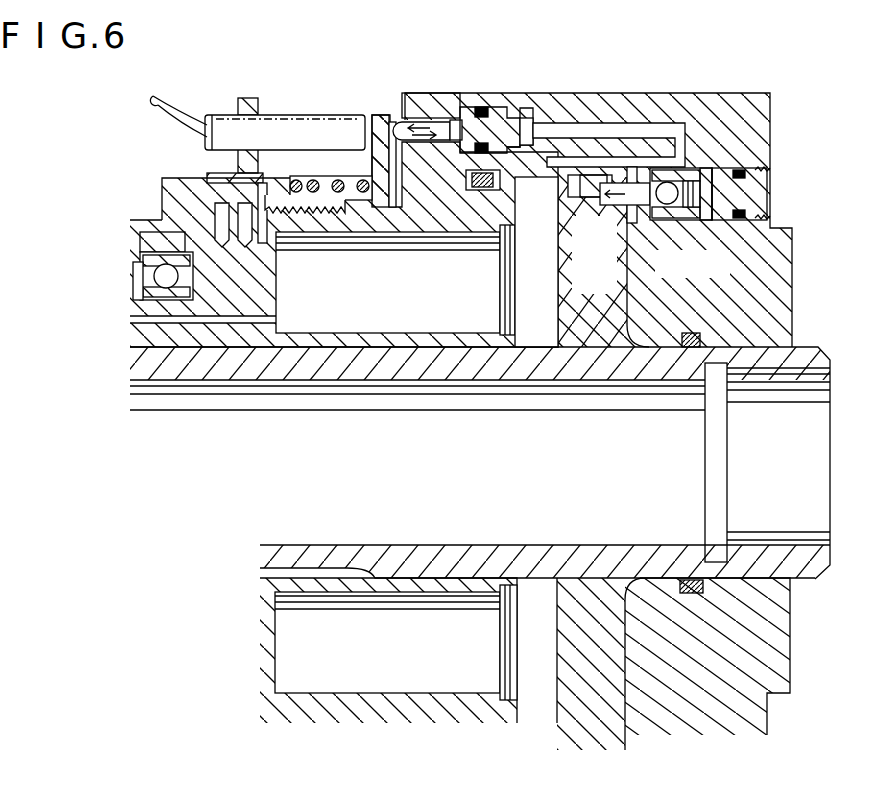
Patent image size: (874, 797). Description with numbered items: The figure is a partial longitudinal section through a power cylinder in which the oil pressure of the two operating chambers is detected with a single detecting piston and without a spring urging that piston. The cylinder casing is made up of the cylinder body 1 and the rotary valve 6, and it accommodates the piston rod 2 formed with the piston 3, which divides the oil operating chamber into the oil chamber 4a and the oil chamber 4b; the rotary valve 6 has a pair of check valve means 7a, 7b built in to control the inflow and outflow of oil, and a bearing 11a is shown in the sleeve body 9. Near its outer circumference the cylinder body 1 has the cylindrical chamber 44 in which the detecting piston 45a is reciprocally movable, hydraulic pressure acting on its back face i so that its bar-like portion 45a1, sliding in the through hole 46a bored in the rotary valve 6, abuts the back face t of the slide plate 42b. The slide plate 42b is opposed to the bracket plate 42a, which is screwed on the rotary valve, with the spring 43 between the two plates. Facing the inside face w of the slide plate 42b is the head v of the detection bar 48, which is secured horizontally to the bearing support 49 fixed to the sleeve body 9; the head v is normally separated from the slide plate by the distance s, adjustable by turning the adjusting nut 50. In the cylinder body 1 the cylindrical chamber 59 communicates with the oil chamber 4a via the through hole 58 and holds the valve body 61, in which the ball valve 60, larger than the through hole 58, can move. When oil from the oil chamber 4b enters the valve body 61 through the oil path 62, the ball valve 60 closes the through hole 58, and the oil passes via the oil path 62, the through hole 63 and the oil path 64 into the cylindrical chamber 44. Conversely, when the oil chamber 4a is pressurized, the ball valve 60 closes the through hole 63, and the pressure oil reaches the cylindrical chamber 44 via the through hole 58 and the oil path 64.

The cylinder body 1 is at (770, 93).
The piston rod 2 is at (210, 372).
The piston 3 is at (570, 658).
The oil chamber 4a is at (628, 193).
The oil chamber 4b is at (560, 295).
The rotary valve 6 is at (437, 92).
The check valve means 7a is at (428, 295).
The check valve means 7b is at (428, 655).
The sleeve body 9 is at (172, 193).
The bearing 11a is at (152, 260).
The bracket plate 42a is at (260, 173).
The slide plate 42b is at (378, 115).
The spring 43 is at (337, 183).
The cylindrical chamber 44 is at (520, 113).
The detecting piston 45a is at (493, 120).
The bar-like portion 45a1 is at (397, 125).
The through hole 46a is at (447, 122).
The detection bar 48 is at (293, 115).
The bearing support 49 is at (250, 98).
The adjusting nut 50 is at (237, 107).
The through hole 58 is at (652, 218).
The cylindrical chamber 59 is at (643, 235).
The ball valve 60 is at (669, 202).
The valve body 61 is at (697, 205).
The oil path 62 is at (544, 173).
The through hole 63 is at (707, 192).
The oil path 64 is at (595, 132).
The head v is at (360, 130).
The distance s is at (373, 120).
The inside face w is at (373, 163).
The back face t is at (396, 183).
The back face i is at (522, 127).